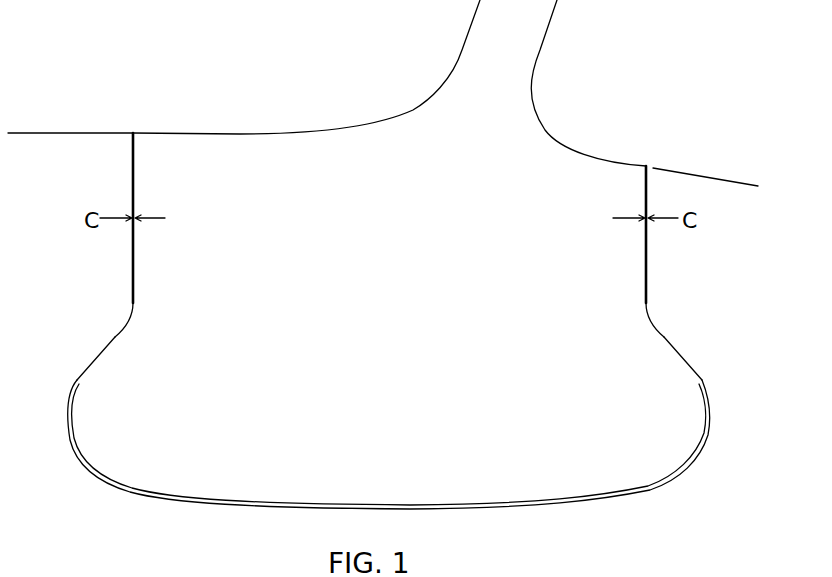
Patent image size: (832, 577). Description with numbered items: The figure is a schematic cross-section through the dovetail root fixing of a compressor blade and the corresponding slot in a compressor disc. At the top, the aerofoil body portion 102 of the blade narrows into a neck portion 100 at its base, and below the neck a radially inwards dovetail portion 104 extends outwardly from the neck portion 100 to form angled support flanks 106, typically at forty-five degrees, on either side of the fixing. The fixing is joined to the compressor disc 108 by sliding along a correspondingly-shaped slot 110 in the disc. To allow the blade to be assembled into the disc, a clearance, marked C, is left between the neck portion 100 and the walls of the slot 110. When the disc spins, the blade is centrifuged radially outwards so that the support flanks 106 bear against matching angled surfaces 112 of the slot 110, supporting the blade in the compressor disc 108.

The neck portion 100 is at (419, 273).
The aerofoil body portion 102 is at (527, 46).
The dovetail portion 104 is at (420, 441).
The support flanks 106 is at (113, 339).
The compressor disc 108 is at (68, 188).
The slot 110 is at (667, 483).
The angled surfaces 112 is at (92, 358).